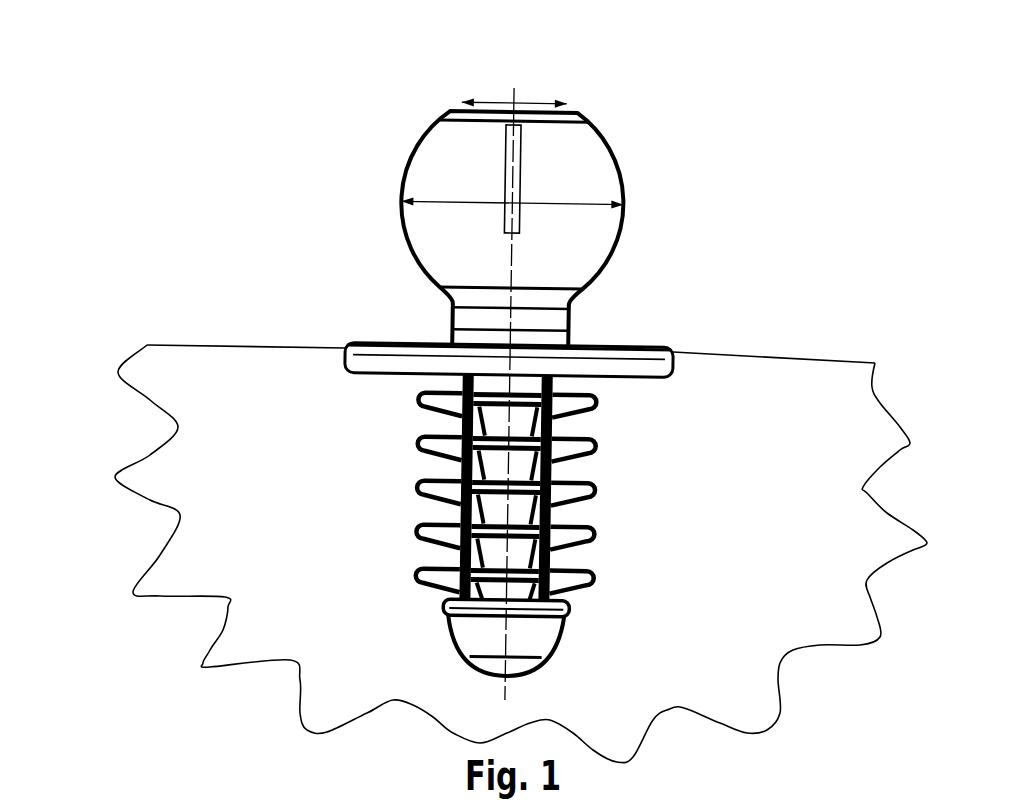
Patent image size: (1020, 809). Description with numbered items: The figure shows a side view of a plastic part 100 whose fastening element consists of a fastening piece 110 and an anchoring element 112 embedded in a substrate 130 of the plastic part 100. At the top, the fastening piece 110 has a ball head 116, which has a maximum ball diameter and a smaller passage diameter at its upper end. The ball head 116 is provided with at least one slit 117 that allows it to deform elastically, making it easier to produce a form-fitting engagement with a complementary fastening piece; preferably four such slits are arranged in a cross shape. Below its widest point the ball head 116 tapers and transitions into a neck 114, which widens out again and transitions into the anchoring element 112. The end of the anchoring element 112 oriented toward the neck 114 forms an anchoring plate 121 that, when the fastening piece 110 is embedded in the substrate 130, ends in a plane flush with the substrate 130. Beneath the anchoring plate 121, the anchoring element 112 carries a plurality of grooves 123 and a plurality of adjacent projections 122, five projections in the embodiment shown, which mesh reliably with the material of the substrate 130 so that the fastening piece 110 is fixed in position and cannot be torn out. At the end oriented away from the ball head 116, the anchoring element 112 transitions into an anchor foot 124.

The plastic part 100 is at (345, 281).
The fastening piece 110 is at (398, 154).
The anchoring element 112 is at (388, 500).
The neck 114 is at (568, 323).
The ball head 116 is at (620, 177).
The slit 117 is at (512, 148).
The anchoring plate 121 is at (350, 350).
The projections 122 is at (598, 488).
The grooves 123 is at (558, 427).
The anchor foot 124 is at (557, 638).
The substrate 130 is at (225, 555).